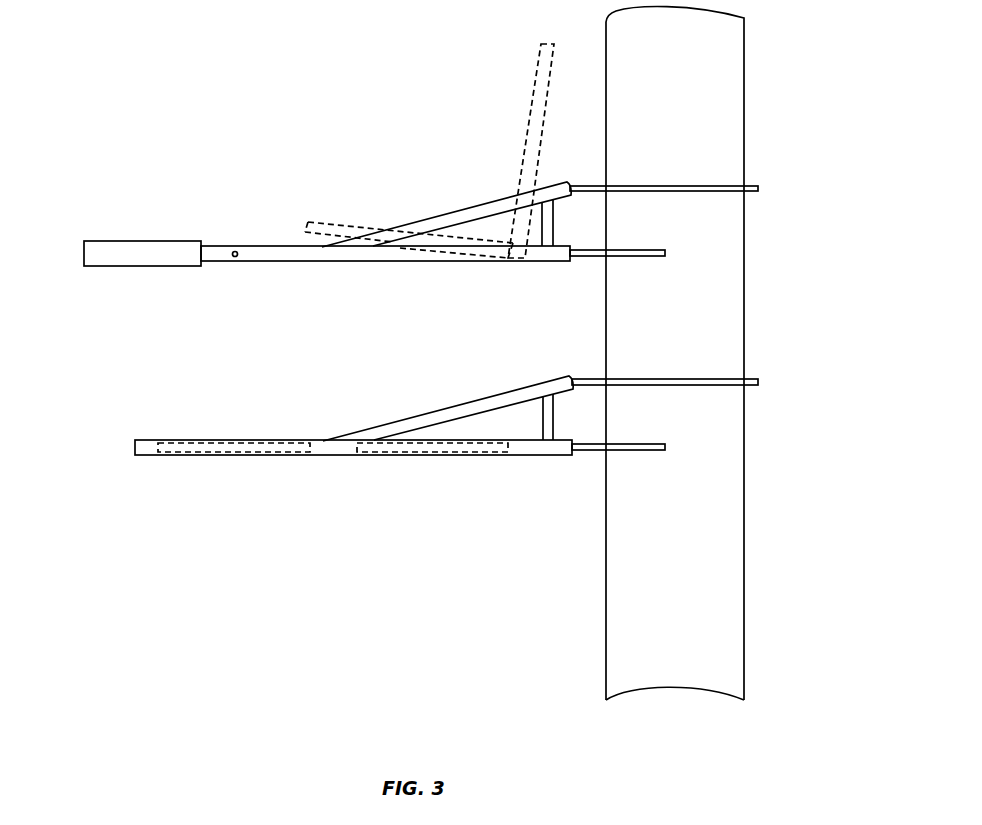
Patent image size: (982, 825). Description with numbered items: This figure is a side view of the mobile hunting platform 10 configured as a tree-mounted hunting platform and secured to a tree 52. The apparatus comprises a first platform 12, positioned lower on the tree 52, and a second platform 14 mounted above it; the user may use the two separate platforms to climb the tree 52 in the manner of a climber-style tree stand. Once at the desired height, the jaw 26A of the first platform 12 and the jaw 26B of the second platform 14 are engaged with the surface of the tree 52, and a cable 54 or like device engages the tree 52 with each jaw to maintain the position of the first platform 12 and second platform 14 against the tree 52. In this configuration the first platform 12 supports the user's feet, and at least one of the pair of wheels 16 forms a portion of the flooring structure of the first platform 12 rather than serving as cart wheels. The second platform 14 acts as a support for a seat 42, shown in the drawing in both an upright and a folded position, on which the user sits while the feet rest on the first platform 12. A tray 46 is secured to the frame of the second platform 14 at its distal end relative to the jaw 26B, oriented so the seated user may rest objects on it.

The mobile hunting platform 10 is at (196, 135).
The first platform 12 is at (148, 457).
The second platform 14 is at (217, 263).
The pair of wheels 16 is at (217, 453).
The jaw 26A is at (650, 444).
The jaw 26B is at (650, 249).
The seat 42 is at (322, 222).
The tray 46 is at (107, 240).
The tree 52 is at (732, 86).
The cable 54 is at (728, 186).